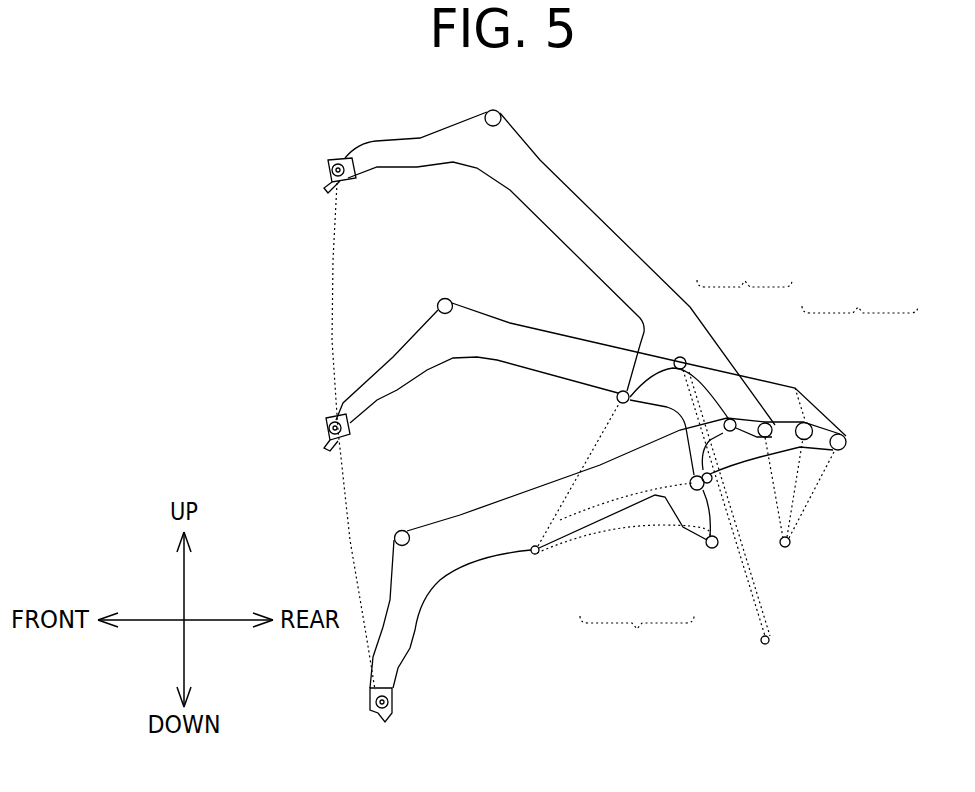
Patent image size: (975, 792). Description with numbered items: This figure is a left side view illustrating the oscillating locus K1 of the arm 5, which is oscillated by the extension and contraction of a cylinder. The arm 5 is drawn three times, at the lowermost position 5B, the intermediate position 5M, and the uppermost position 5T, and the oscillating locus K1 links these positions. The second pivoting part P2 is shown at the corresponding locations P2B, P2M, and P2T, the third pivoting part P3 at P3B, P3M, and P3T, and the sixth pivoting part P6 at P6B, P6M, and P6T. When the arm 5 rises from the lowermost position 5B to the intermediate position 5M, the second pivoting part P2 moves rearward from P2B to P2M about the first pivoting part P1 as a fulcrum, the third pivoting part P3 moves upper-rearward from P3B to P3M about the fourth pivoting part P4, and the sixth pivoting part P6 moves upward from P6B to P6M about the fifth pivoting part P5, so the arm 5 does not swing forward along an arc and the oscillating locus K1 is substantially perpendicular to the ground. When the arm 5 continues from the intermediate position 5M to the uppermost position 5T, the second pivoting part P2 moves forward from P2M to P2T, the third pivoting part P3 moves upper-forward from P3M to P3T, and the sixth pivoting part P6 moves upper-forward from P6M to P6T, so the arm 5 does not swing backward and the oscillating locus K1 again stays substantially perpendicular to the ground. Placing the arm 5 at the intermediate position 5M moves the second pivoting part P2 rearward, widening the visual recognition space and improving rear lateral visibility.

The arm 5 is at (645, 168).
The uppermost position 5T is at (638, 250).
The intermediate position 5M is at (488, 330).
The lowermost position 5B is at (445, 533).
The oscillating locus K1 is at (328, 325).
The first pivoting part P1 is at (790, 548).
The second pivoting part P2 is at (860, 296).
The second pivoting part at uppermost position P2T is at (803, 415).
The second pivoting part at lowermost position P2B is at (825, 415).
The second pivoting part at intermediate position P2M is at (848, 436).
The third pivoting part P3 is at (744, 270).
The third pivoting part at uppermost position P3T is at (685, 357).
The third pivoting part at lowermost position P3B is at (727, 419).
The third pivoting part at intermediate position P3M is at (768, 422).
The fourth pivoting part P4 is at (763, 645).
The fifth pivoting part P5 is at (535, 552).
The sixth pivoting part P6 is at (637, 637).
The sixth pivoting part at uppermost position P6T is at (619, 403).
The sixth pivoting part at intermediate position P6M is at (697, 490).
The sixth pivoting part at lowermost position P6B is at (710, 550).